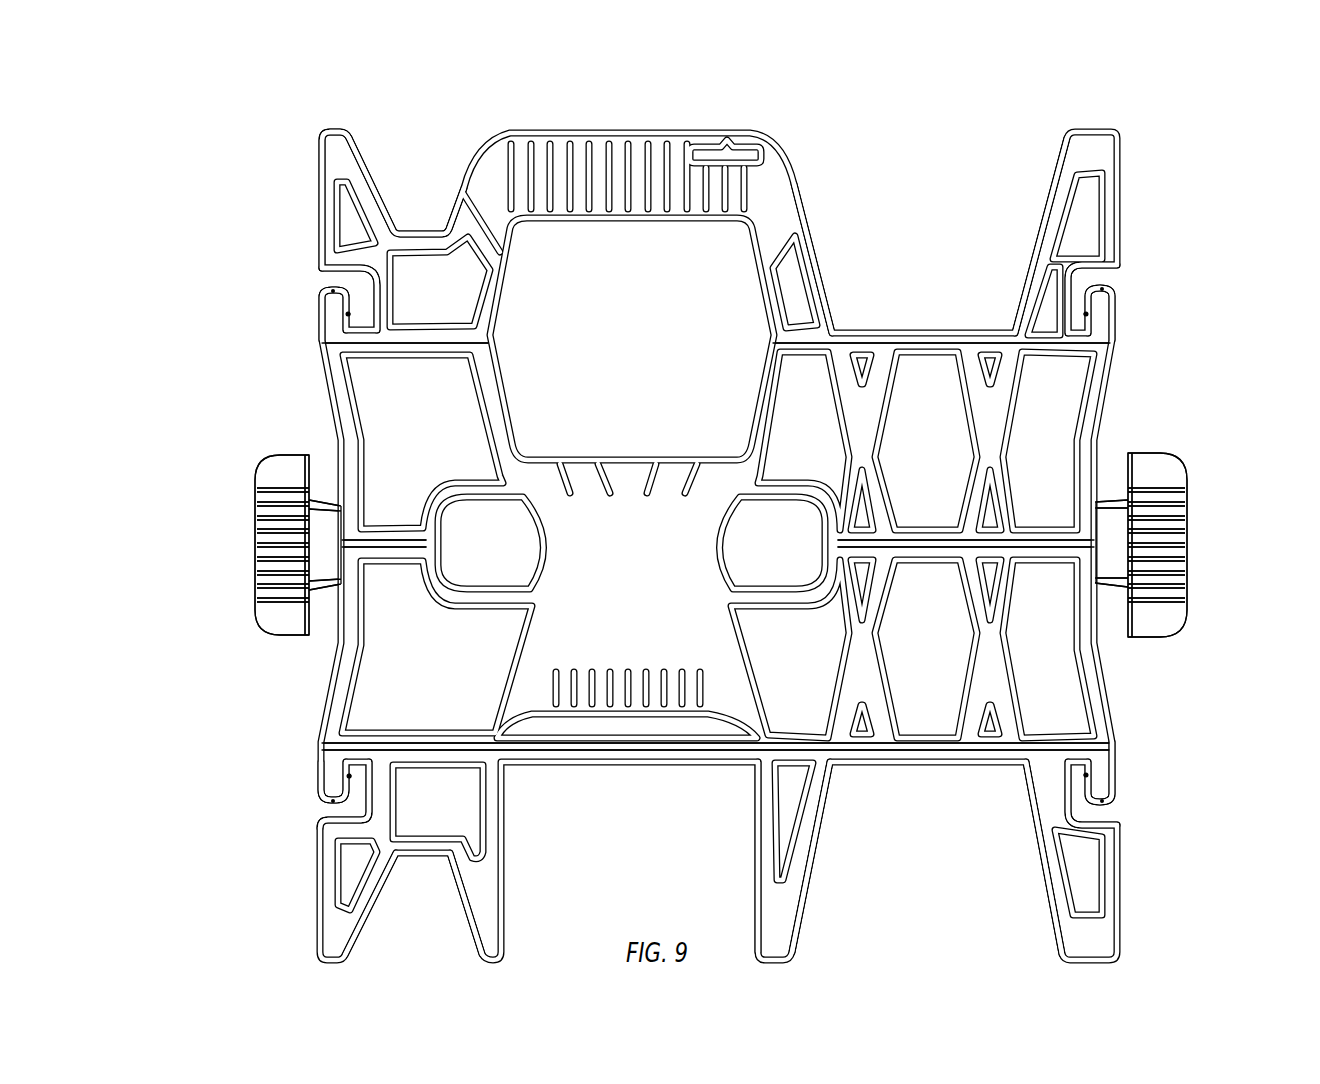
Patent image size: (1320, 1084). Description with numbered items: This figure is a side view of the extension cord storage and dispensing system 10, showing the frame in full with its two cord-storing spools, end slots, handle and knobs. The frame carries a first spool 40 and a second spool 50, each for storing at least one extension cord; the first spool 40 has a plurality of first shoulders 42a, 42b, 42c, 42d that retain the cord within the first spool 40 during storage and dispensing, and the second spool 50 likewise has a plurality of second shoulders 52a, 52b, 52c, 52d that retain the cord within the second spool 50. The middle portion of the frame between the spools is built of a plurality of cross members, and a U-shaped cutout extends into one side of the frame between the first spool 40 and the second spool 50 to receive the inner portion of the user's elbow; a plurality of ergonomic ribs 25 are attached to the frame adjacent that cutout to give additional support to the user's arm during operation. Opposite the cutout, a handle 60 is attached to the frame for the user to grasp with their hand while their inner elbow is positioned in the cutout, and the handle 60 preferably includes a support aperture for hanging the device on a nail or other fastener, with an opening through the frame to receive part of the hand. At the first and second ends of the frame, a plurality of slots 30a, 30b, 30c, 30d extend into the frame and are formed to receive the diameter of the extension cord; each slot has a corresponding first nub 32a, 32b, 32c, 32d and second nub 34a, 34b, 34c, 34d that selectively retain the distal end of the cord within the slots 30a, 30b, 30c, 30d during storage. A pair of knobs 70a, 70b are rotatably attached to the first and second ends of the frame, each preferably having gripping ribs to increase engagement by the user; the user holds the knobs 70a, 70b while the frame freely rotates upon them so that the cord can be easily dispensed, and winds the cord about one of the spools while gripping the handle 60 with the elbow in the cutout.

The extension cord storage and dispensing system 10 is at (1156, 156).
The ergonomic ribs 25 is at (630, 690).
The slot 30a is at (322, 272).
The slot 30b is at (333, 823).
The slot 30c is at (1105, 270).
The slot 30d is at (1100, 818).
The first nub 32a is at (331, 293).
The first nub 32b is at (332, 802).
The first nub 32c is at (1108, 290).
The first nub 32d is at (1108, 799).
The second nub 34a is at (348, 315).
The second nub 34b is at (349, 776).
The second nub 34c is at (1087, 316).
The second nub 34d is at (1088, 772).
The first spool 40 is at (823, 276).
The first shoulder 42a is at (798, 190).
The first shoulder 42b is at (1042, 230).
The first shoulder 42c is at (807, 863).
The first shoulder 42d is at (1048, 883).
The second spool 50 is at (360, 150).
The second shoulder 52a is at (363, 163).
The second shoulder 52b is at (455, 232).
The second shoulder 52c is at (368, 915).
The second shoulder 52d is at (455, 935).
The handle 60 is at (668, 145).
The knob 70a is at (271, 626).
The knob 70b is at (1177, 473).